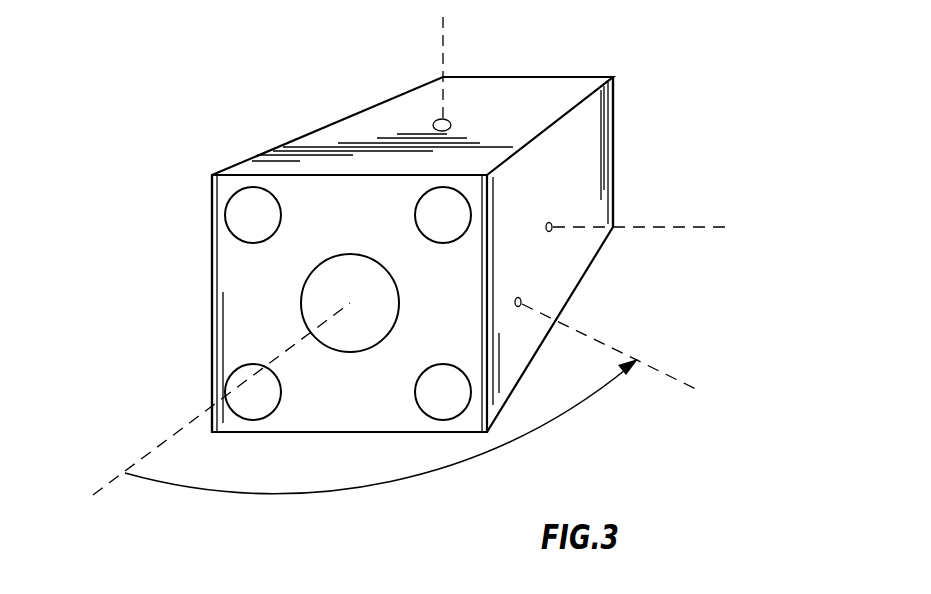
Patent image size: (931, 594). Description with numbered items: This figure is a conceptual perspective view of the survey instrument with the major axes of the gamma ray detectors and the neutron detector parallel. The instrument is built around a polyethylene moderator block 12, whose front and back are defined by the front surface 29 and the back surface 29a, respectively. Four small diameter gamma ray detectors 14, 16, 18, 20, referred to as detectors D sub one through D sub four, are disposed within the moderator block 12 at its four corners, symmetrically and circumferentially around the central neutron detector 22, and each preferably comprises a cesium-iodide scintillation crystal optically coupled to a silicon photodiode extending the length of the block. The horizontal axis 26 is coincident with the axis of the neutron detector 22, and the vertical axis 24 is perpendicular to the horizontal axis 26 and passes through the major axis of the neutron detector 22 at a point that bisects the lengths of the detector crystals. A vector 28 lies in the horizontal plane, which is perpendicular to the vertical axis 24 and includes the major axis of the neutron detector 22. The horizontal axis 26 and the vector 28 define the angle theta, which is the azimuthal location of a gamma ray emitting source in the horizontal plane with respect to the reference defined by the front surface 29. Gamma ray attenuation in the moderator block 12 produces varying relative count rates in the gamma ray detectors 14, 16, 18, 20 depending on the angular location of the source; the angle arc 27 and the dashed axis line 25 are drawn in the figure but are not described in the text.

The moderator block 12 is at (597, 166).
The gamma ray detector 14 is at (252, 412).
The gamma ray detector 16 is at (233, 230).
The gamma ray detector 18 is at (465, 215).
The gamma ray detector 20 is at (425, 410).
The neutron detector 22 is at (335, 332).
The vertical axis 24 is at (441, 38).
The horizontal axis 25 is at (708, 225).
The horizontal axis 26 is at (177, 430).
The rotation angle arc 27 is at (550, 420).
The vector 28 is at (668, 375).
The front surface 29 is at (245, 305).
The back surface 29a is at (626, 68).